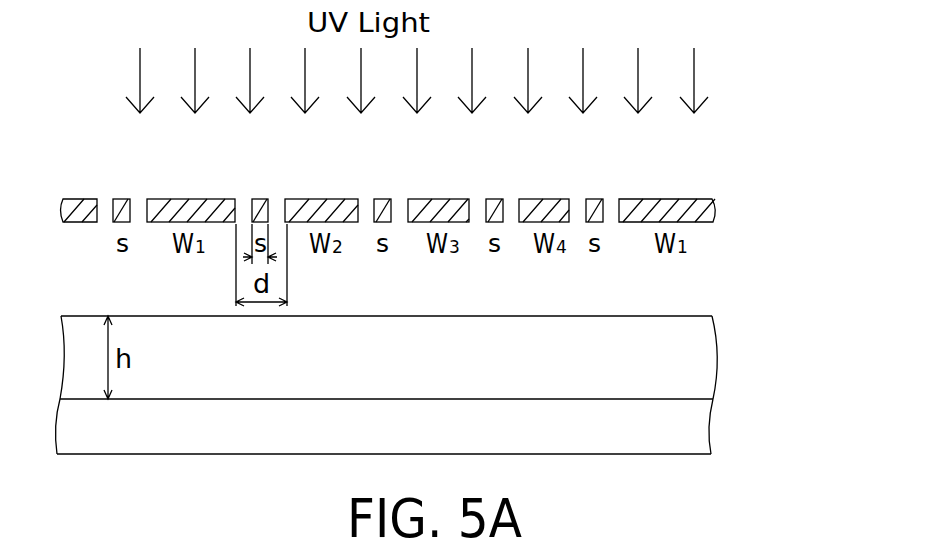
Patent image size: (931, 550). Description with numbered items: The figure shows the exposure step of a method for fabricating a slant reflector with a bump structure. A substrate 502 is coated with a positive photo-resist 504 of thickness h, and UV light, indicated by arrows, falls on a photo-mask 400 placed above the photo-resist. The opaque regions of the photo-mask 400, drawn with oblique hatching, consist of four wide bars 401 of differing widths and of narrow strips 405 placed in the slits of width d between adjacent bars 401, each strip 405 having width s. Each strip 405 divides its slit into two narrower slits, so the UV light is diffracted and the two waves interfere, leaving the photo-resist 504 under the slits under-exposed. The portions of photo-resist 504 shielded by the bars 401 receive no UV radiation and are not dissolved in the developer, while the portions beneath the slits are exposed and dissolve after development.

The photo-mask 400 is at (436, 175).
The bars 401 is at (562, 170).
The strips 405 is at (260, 205).
The photo-resist 504 is at (700, 367).
The substrate 502 is at (700, 432).